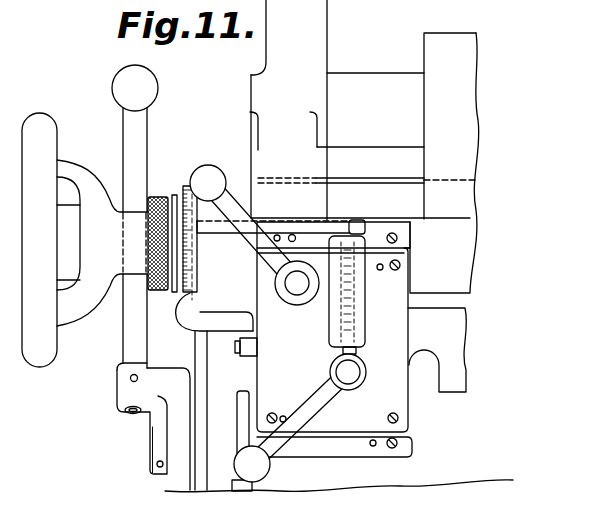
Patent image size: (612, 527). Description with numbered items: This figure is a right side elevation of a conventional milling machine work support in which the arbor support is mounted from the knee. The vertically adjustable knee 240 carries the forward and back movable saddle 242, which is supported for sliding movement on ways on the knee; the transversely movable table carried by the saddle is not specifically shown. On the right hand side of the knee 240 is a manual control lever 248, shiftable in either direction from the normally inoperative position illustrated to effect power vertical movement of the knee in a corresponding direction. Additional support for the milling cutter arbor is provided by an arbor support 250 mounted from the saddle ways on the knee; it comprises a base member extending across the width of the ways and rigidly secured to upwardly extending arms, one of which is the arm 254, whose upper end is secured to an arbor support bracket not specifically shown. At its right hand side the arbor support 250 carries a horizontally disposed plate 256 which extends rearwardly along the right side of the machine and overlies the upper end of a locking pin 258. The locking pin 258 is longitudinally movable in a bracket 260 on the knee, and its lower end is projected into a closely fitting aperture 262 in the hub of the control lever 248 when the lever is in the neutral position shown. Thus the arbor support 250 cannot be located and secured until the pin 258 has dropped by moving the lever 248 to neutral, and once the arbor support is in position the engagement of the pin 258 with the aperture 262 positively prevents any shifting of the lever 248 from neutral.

The knee 240 is at (223, 466).
The saddle 242 is at (458, 54).
The manual control lever 248 is at (308, 410).
The arbor support 250 is at (267, 150).
The upwardly extending arm 254 is at (283, 42).
The horizontally disposed plate 256 is at (236, 222).
The locking pin 258 is at (352, 232).
The bracket 260 is at (336, 330).
The aperture 262 is at (333, 370).